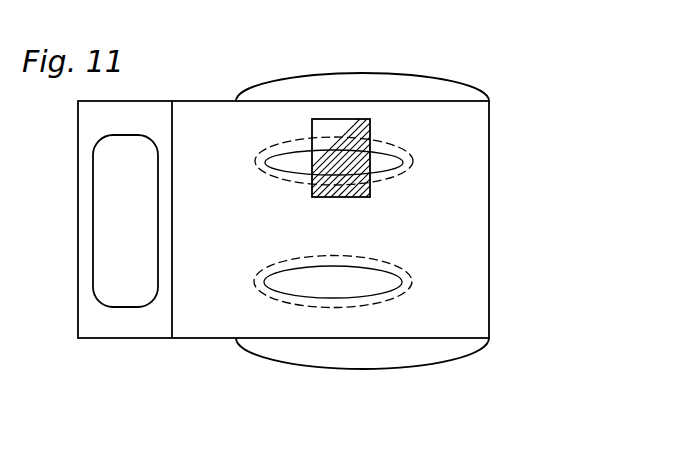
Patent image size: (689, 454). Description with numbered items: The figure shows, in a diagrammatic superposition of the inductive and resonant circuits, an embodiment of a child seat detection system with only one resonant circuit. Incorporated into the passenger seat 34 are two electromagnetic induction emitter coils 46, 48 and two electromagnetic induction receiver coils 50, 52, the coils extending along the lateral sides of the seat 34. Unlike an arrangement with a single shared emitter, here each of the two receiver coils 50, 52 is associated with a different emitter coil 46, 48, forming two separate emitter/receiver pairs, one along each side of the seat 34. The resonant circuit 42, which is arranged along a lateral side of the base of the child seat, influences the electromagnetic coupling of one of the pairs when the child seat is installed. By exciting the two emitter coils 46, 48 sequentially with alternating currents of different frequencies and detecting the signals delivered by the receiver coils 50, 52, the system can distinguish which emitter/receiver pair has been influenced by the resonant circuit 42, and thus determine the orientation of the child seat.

The passenger seat 34 is at (213, 312).
The resonant circuit 42 is at (338, 119).
The electromagnetic induction emitter coil 46 is at (395, 178).
The electromagnetic induction emitter coil 48 is at (400, 279).
The electromagnetic induction receiver coil 50 is at (410, 153).
The electromagnetic induction receiver coil 52 is at (392, 300).